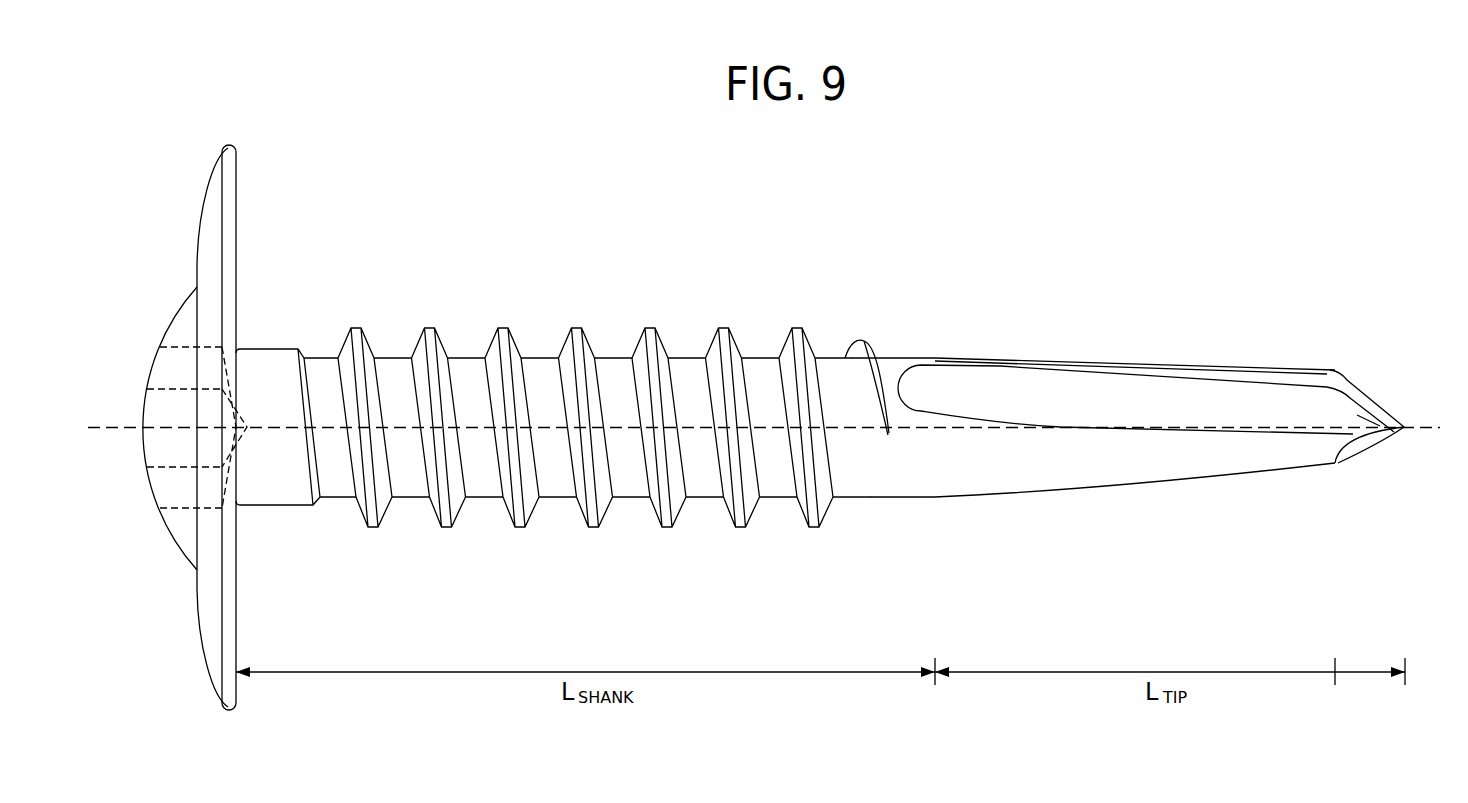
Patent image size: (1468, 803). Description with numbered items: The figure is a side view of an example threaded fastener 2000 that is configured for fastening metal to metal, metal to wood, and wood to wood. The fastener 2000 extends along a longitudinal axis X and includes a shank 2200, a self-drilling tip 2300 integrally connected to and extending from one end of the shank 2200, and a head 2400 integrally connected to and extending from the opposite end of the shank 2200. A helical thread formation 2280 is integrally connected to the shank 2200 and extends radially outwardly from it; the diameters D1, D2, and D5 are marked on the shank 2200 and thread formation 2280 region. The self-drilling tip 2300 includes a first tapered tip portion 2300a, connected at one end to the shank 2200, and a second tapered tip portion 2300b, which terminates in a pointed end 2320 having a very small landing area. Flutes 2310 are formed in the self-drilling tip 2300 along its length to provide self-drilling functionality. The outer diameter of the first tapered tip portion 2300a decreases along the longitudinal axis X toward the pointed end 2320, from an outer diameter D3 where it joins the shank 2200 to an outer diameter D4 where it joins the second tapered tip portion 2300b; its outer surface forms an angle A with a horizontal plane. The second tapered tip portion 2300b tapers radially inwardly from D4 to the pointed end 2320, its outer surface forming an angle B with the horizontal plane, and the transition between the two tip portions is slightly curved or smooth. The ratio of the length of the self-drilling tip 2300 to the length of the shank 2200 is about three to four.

The fastener 2000 is at (1055, 182).
The shank 2200 is at (585, 448).
The helical thread formation 2280 is at (576, 326).
The self-drilling tip 2300 is at (1182, 477).
The first tapered tip portion 2300a is at (1335, 570).
The second tapered tip portion 2300b is at (1396, 492).
The flute 2310 is at (1380, 410).
The pointed end 2320 is at (1408, 424).
The head 2400 is at (229, 140).
The longitudinal axis X is at (113, 430).
The neck diameter D1 is at (270, 567).
The root diameter D2 is at (328, 560).
The outer diameter D3 is at (935, 557).
The outer diameter D4 is at (1335, 557).
The thread major diameter D5 is at (408, 590).
The angle A is at (1220, 361).
The angle B is at (1443, 467).